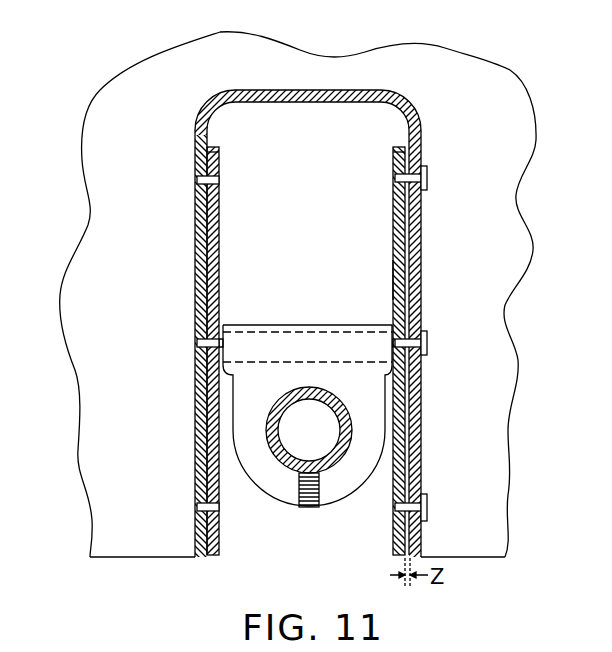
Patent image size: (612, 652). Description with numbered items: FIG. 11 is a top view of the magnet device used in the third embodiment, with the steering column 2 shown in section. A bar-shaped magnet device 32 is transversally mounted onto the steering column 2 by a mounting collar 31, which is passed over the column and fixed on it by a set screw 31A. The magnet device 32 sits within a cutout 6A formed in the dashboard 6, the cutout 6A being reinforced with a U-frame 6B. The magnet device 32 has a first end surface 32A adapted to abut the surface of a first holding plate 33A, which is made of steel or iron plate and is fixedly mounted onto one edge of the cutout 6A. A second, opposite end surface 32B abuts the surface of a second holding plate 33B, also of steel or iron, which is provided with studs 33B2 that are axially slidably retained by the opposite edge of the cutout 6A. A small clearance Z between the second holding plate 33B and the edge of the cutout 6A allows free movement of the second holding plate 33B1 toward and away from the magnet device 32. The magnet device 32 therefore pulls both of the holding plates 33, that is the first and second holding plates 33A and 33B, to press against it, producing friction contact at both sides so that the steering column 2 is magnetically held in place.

The dashboard 6 is at (120, 312).
The cutout 6A is at (358, 118).
The frame bracket 6B is at (279, 93).
The plate pair 33 is at (306, 322).
The first holding plate 33A is at (218, 212).
The second holding plate 33B is at (393, 188).
The second holding plate 33B1 is at (393, 278).
The studs 33B2 is at (427, 172).
The magnet device 32 is at (300, 332).
The first end surface 32A is at (199, 362).
The second end surface 32B is at (380, 343).
The mounting collar 31 is at (342, 492).
The set screw 31A is at (303, 508).
The steering column 2 is at (277, 462).